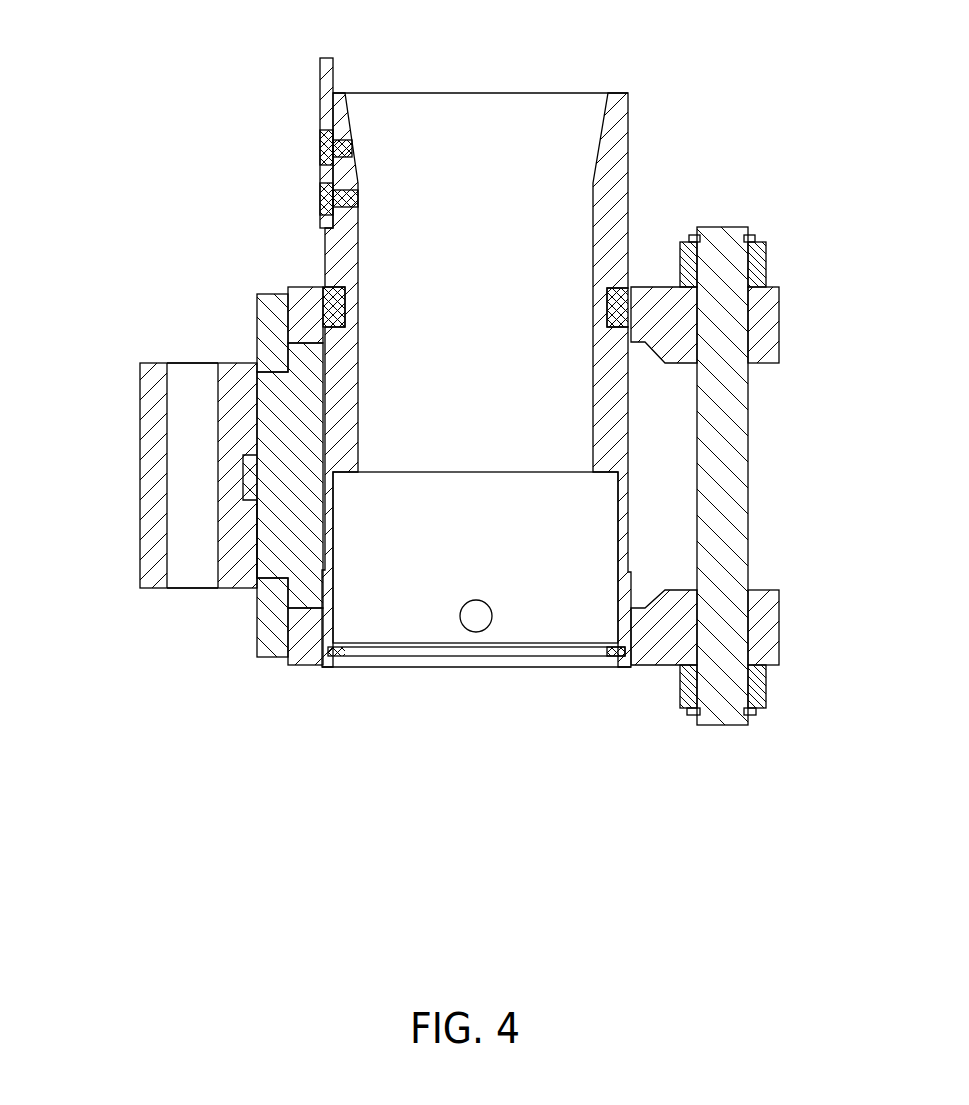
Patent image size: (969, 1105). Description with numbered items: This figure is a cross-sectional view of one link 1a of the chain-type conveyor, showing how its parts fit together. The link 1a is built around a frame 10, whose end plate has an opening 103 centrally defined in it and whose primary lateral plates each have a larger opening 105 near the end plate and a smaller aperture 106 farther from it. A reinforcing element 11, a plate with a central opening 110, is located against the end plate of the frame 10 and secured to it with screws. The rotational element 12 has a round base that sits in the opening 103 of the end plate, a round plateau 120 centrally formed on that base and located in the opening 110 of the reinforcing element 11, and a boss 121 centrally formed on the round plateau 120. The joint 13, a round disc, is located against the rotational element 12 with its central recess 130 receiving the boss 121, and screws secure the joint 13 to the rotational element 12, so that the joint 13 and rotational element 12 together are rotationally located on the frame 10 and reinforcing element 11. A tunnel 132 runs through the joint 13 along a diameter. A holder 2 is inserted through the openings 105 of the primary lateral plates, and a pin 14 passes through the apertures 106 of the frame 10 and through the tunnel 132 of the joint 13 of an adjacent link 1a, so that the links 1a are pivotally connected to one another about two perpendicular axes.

The link 1a is at (528, 737).
The holder 2 is at (402, 628).
The frame 10 is at (768, 323).
The reinforcing element 11 is at (275, 655).
The rotational element 12 is at (298, 520).
The joint 13 is at (147, 385).
The pin 14 is at (742, 474).
The opening 103 is at (290, 350).
The opening 105 is at (647, 642).
The aperture 106 is at (740, 633).
The opening 110 is at (272, 586).
The round plateau 120 is at (267, 422).
The boss 121 is at (252, 470).
The recess 130 is at (258, 500).
The tunnel 132 is at (180, 373).